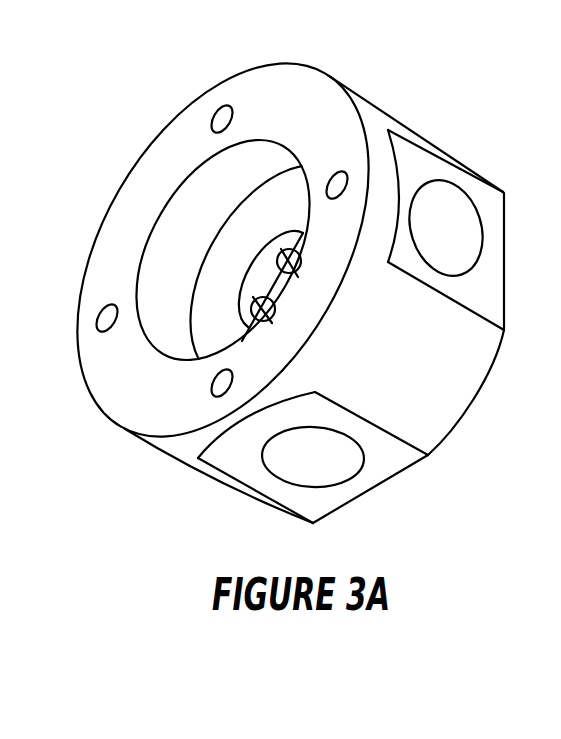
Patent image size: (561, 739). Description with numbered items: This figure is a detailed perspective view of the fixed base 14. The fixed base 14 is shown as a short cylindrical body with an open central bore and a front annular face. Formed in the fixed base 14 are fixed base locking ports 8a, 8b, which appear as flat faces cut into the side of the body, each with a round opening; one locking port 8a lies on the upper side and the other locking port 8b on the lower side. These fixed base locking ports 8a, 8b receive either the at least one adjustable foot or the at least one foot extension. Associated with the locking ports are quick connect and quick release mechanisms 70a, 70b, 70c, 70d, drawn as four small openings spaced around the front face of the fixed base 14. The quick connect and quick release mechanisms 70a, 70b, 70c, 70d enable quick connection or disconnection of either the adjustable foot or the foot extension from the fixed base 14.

The fixed base 14 is at (430, 360).
The fixed base locking port 8a is at (477, 218).
The fixed base locking port 8b is at (345, 483).
The quick connect and quick release mechanism 70a is at (328, 174).
The quick connect and quick release mechanism 70b is at (211, 381).
The quick connect and quick release mechanism 70c is at (100, 311).
The quick connect and quick release mechanism 70d is at (214, 116).